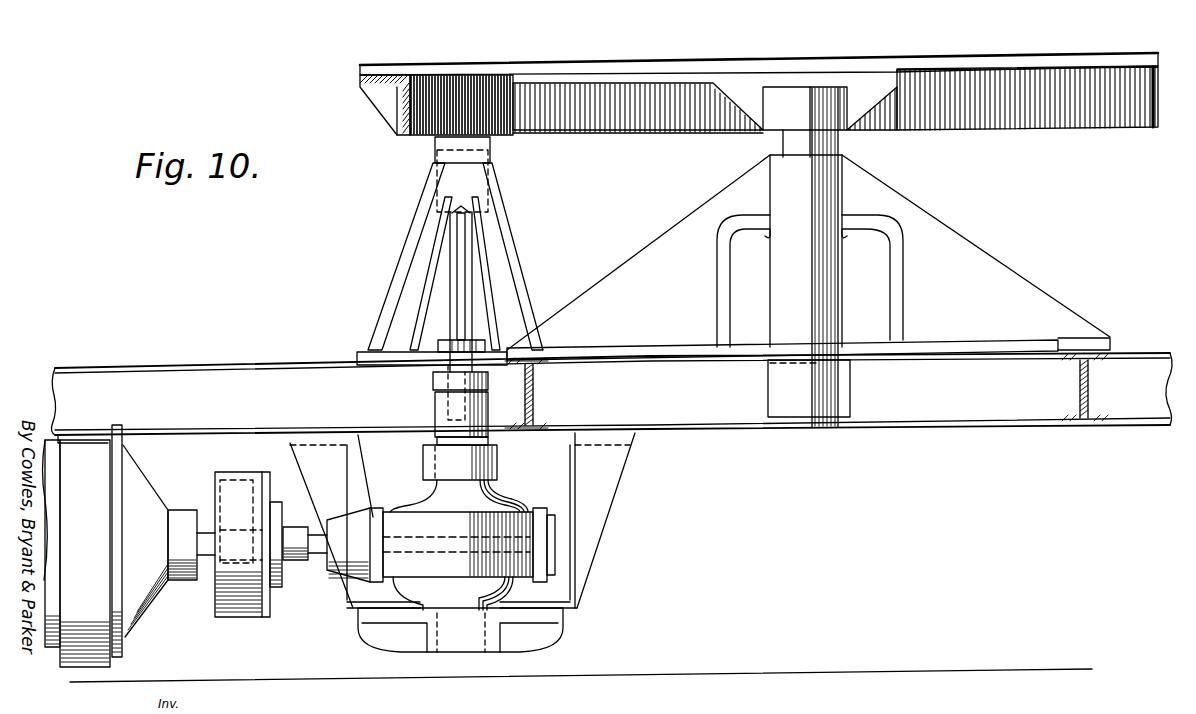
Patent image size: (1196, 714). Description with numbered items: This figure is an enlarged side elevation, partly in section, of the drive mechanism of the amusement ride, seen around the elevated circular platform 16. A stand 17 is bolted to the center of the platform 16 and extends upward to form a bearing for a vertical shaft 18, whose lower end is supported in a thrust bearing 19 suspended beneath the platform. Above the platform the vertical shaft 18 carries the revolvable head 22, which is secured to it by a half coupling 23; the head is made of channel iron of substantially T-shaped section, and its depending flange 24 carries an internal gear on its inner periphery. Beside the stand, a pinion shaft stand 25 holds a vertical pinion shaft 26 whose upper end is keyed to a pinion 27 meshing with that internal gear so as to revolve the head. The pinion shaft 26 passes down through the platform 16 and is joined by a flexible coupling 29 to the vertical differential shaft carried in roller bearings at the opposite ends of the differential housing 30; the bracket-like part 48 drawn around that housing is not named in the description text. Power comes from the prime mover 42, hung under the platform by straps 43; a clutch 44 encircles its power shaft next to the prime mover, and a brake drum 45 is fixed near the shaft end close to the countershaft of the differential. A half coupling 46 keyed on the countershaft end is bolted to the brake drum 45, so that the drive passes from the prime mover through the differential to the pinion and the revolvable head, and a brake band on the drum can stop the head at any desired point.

The platform 16 is at (287, 348).
The stand 17 is at (968, 262).
The vertical shaft 18 is at (840, 143).
The thrust bearing 19 is at (822, 391).
The revolvable head 22 is at (963, 63).
The half coupling 23 is at (820, 88).
The depending flange 24 is at (397, 107).
The pinion shaft stand 25 is at (498, 254).
The pinion shaft 26 is at (460, 232).
The pinion 27 is at (508, 137).
The flexible coupling 29 is at (442, 412).
The differential housing 30 is at (475, 498).
The prime mover 42 is at (72, 433).
The straps 43 is at (123, 660).
The clutch 44 is at (137, 482).
The brake drum 45 is at (270, 617).
The half coupling 46 is at (293, 563).
The motor housing 48 is at (583, 545).